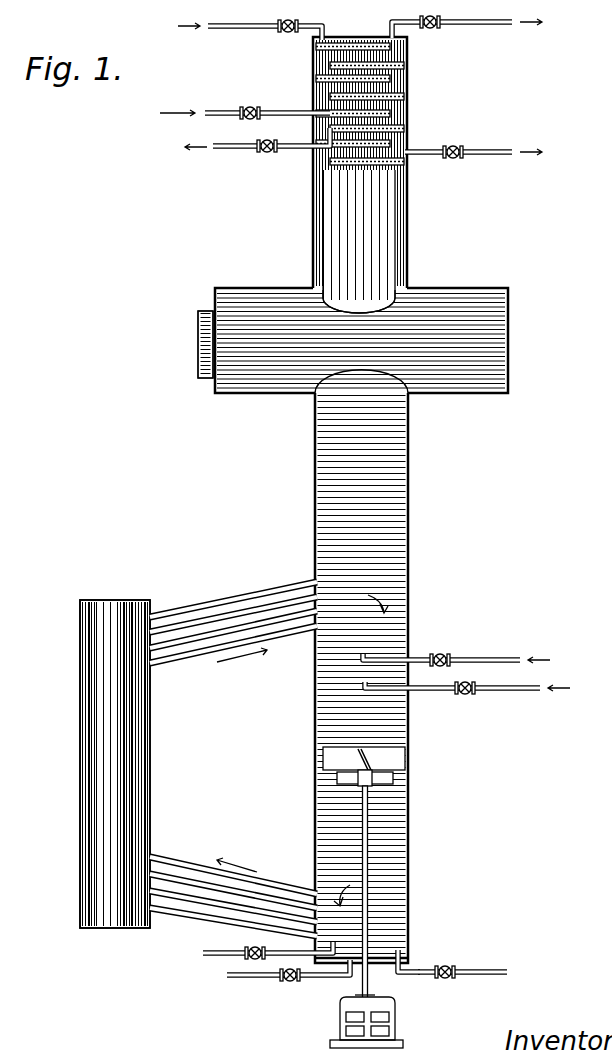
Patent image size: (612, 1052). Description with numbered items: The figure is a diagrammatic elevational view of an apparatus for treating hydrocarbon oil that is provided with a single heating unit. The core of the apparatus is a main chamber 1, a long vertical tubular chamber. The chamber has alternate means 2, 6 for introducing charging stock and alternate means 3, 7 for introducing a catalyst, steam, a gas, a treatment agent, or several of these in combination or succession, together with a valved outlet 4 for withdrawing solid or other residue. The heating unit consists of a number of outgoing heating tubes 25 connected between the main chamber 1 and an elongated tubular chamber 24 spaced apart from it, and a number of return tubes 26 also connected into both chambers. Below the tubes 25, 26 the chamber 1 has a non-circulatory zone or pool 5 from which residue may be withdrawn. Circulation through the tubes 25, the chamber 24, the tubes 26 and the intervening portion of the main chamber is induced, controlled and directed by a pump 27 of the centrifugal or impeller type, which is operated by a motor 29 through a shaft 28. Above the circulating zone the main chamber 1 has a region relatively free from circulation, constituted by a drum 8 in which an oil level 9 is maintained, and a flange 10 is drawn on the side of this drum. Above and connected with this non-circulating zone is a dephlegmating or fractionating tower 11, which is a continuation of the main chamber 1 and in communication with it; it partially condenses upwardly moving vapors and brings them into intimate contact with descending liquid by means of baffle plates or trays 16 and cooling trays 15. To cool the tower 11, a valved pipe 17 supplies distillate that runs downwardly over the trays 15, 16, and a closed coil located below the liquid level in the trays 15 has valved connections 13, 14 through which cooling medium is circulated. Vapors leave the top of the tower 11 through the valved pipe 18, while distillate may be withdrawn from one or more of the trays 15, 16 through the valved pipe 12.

The main chamber 1 is at (410, 470).
The means for the introduction of charging stock 2 is at (250, 950).
The means for the introduction of a catalyst, steam, gas or treatment agent 3 is at (288, 984).
The valved outlet 4 is at (484, 972).
The non-circulatory zone or pool 5 is at (404, 962).
The means for the introduction of charging stock 6 is at (480, 658).
The means for the introduction of a catalyst, steam, gas or treatment agent 7 is at (508, 690).
The drum 8 is at (340, 322).
The oil level 9 is at (480, 336).
The flange / manhole 10 is at (203, 345).
The dephlegmating or fractionating tower 11 is at (407, 229).
The valved pipe 12 is at (455, 160).
The valved connection 13 is at (260, 100).
The valved connection 14 is at (270, 152).
The cooling trays 15 is at (400, 122).
The baffle plates or trays 16 is at (395, 67).
The valved pipe 17 is at (290, 30).
The valved pipe 18 is at (434, 30).
The elongated tubular chamber 24 is at (95, 770).
The outgoing heating tubes 25 is at (190, 912).
The return tubes 26 is at (233, 602).
The pump 27 is at (385, 762).
The shaft 28 is at (364, 975).
The motor 29 is at (392, 1020).